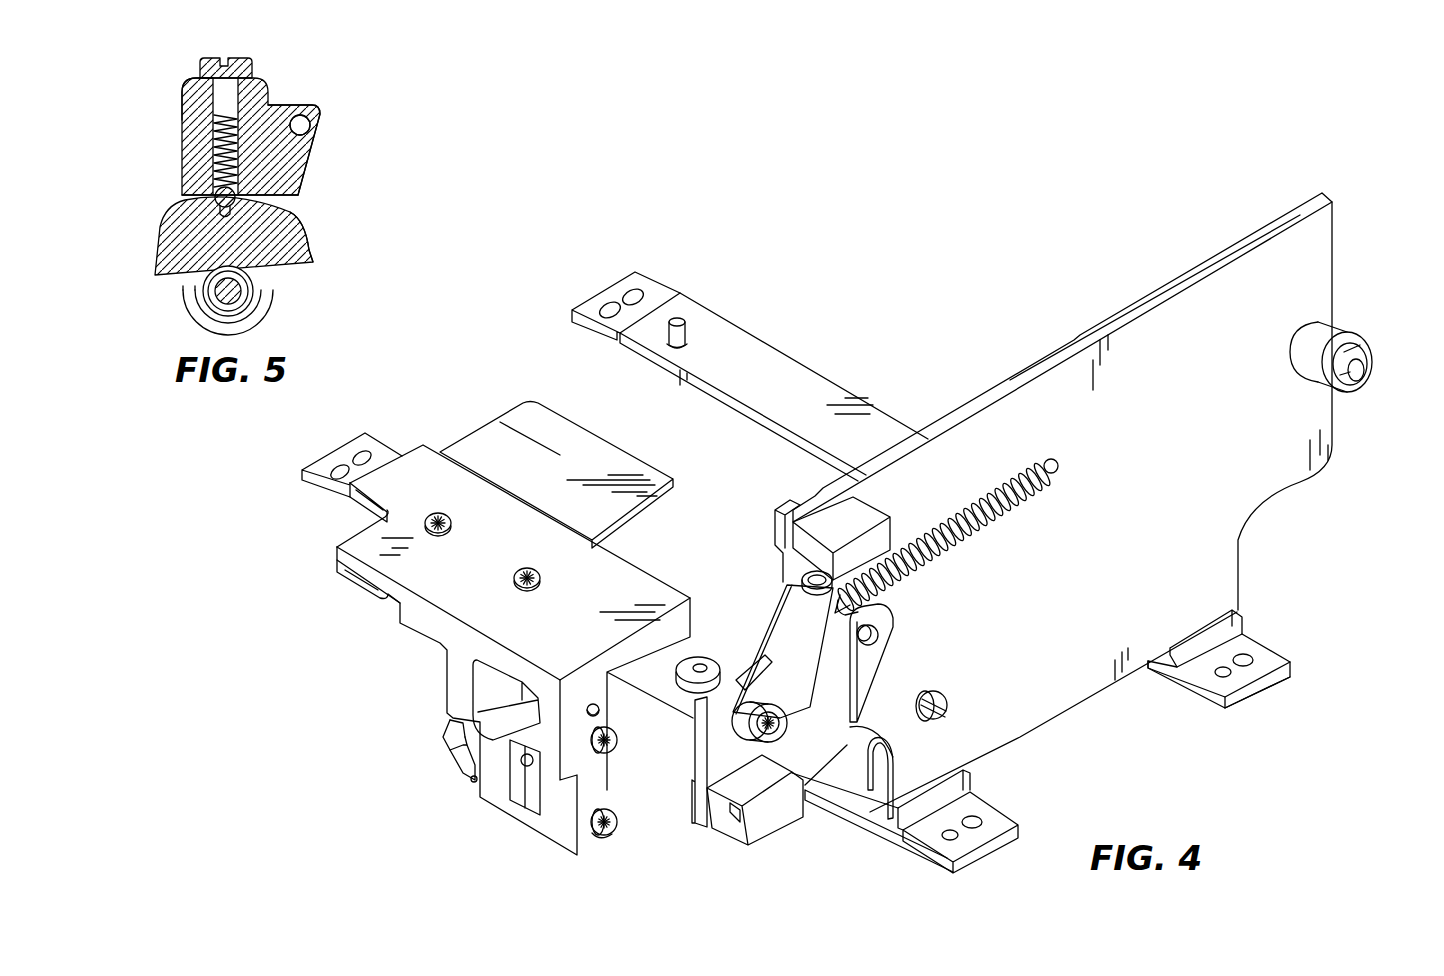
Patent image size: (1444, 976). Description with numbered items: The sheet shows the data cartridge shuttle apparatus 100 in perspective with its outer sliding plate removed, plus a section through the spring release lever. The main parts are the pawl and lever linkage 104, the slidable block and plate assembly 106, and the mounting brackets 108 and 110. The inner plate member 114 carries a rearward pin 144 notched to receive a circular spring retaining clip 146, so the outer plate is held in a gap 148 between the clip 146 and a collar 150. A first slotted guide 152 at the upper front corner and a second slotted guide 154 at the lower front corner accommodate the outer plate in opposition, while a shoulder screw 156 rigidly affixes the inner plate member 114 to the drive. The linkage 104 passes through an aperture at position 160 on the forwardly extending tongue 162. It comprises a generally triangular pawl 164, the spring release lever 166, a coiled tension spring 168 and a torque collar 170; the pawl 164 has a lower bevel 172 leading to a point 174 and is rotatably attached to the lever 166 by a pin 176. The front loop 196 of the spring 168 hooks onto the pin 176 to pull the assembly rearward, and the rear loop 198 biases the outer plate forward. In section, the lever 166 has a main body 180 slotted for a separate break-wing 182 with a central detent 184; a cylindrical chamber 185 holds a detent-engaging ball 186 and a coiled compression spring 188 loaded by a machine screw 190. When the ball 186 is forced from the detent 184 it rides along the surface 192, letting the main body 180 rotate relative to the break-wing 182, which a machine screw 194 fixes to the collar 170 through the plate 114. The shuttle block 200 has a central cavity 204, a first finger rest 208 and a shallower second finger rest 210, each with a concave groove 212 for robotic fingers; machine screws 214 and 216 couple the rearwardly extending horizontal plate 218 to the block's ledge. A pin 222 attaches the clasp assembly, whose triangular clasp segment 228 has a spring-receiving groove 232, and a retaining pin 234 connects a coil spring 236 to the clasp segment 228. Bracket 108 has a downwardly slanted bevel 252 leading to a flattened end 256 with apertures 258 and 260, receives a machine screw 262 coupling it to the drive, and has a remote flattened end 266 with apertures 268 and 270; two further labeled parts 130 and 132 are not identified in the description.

In FIG. 4, the data cartridge shuttle apparatus 100 is at (1248, 520).
In FIG. 4, the pawl and lever linkage 104 is at (913, 650).
In FIG. 4, the slidable block and plate assembly 106 is at (557, 458).
In FIG. 4, the mounting bracket 108 is at (1248, 655).
In FIG. 4, the mounting bracket 110 is at (977, 807).
In FIG. 4, the inner plate member 114 is at (1232, 452).
In FIG. 4, the screw 130 is at (620, 824).
In FIG. 4, the screw 132 is at (618, 737).
In FIG. 4, the rearward pin 144 is at (1365, 373).
In FIG. 4, the circular spring retaining clip 146 is at (1368, 352).
In FIG. 4, the gap 148 is at (1340, 337).
In FIG. 4, the collar 150 is at (1317, 330).
In FIG. 4, the first slotted guide 152 is at (840, 523).
In FIG. 4, the second slotted guide 154 is at (767, 827).
In FIG. 4, the shoulder screw 156 is at (940, 703).
In FIG. 4, the position 160 is at (693, 772).
In FIG. 4, the forwardly extending tongue 162 is at (793, 757).
In FIG. 4, the pawl 164 is at (877, 663).
In FIG. 5, the spring release lever 166 is at (330, 170).
In FIG. 4, the spring release lever 166 is at (779, 645).
In FIG. 4, the coiled tension spring 168 is at (982, 513).
In FIG. 4, the torque collar 170 is at (697, 655).
In FIG. 4, the lower bevel 172 is at (855, 742).
In FIG. 4, the point 174 is at (887, 733).
In FIG. 5, the pin 176 is at (310, 123).
In FIG. 4, the pin 176 is at (877, 637).
In FIG. 5, the main body 180 is at (287, 110).
In FIG. 4, the main body 180 is at (815, 640).
In FIG. 5, the break-wing 182 is at (170, 232).
In FIG. 4, the break-wing 182 is at (747, 677).
In FIG. 5, the central detent 184 is at (282, 273).
In FIG. 5, the cylindrical chamber 185 is at (212, 120).
In FIG. 5, the detent-engaging ball 186 is at (217, 192).
In FIG. 5, the coiled compression spring 188 is at (213, 150).
In FIG. 5, the machine screw 190 is at (250, 63).
In FIG. 4, the machine screw 190 is at (778, 516).
In FIG. 5, the surface 192 is at (307, 227).
In FIG. 5, the machine screw 194 is at (222, 300).
In FIG. 4, the machine screw 194 is at (777, 728).
In FIG. 4, the front loop 196 is at (885, 602).
In FIG. 4, the rear loop 198 is at (1052, 458).
In FIG. 4, the shuttle block 200 is at (491, 650).
In FIG. 4, the central cavity 204 is at (483, 687).
In FIG. 4, the first finger rest 208 is at (363, 573).
In FIG. 4, the second finger rest 210 is at (368, 490).
In FIG. 4, the groove 212 is at (357, 507).
In FIG. 4, the machine screw 214 is at (452, 525).
In FIG. 4, the machine screw 216 is at (533, 595).
In FIG. 4, the rearwardly extending horizontal plate 218 is at (525, 435).
In FIG. 4, the pin 222 is at (537, 800).
In FIG. 4, the triangular clasp segment 228 is at (453, 763).
In FIG. 4, the central spring-receiving groove 232 is at (447, 743).
In FIG. 4, the retaining pin 234 is at (473, 785).
In FIG. 4, the coil spring 236 is at (447, 732).
In FIG. 4, the downwardly slanted bevel 252 is at (736, 349).
In FIG. 4, the flattened end 256 is at (607, 317).
In FIG. 4, the aperture 258 is at (600, 300).
In FIG. 4, the aperture 260 is at (638, 287).
In FIG. 4, the machine screw 262 is at (684, 322).
In FIG. 4, the flattened end 266 is at (1258, 683).
In FIG. 4, the aperture 268 is at (1212, 677).
In FIG. 4, the aperture 270 is at (1248, 650).